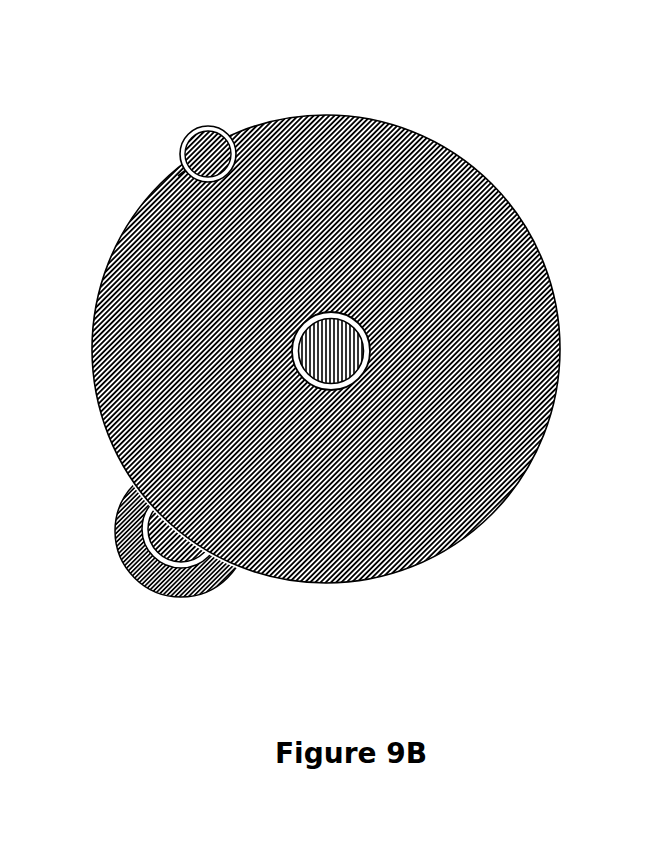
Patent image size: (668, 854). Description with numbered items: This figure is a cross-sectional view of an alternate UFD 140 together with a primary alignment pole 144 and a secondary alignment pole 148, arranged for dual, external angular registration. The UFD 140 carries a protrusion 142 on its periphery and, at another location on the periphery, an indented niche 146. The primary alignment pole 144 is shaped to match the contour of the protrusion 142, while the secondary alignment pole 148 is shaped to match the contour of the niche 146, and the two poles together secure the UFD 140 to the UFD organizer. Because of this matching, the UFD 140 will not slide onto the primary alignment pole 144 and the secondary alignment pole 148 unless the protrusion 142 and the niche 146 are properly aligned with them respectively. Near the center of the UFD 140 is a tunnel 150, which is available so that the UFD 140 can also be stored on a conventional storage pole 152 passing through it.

The UFD 140 is at (518, 208).
The protrusion 142 is at (196, 578).
The primary alignment pole 144 is at (120, 512).
The indented niche 146 is at (187, 169).
The secondary alignment pole 148 is at (212, 127).
The tunnel 150 is at (364, 358).
The conventional storage pole 152 is at (368, 333).